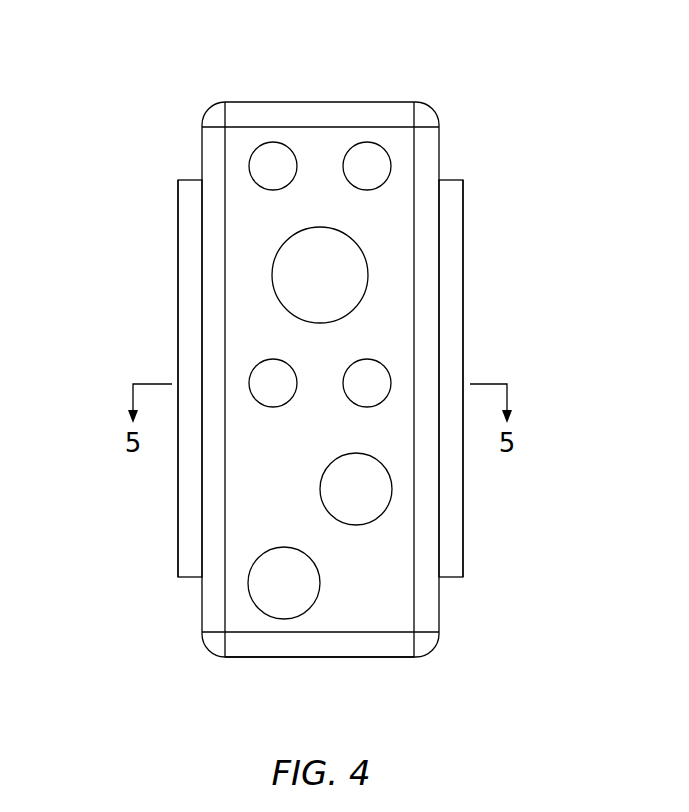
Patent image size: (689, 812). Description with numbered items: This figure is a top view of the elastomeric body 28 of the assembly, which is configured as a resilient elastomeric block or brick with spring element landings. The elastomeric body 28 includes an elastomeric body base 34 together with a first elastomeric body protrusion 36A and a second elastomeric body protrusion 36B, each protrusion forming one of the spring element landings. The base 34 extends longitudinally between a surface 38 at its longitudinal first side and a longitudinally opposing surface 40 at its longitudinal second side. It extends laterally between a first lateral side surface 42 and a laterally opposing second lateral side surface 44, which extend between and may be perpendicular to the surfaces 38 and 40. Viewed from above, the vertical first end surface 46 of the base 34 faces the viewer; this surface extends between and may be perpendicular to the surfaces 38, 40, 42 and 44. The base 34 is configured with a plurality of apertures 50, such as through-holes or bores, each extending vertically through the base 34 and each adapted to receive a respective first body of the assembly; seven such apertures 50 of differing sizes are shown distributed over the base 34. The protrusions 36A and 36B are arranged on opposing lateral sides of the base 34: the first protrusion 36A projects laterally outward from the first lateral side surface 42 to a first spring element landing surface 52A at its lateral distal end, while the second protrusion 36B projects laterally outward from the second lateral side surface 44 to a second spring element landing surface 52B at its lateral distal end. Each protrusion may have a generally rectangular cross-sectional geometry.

The elastomeric body 28 is at (484, 74).
The elastomeric body base 34 is at (237, 669).
The first elastomeric body protrusion 36A is at (472, 557).
The second elastomeric body protrusion 36B is at (168, 557).
The surface at longitudinal first side 38 is at (357, 101).
The surface at longitudinal second side 40 is at (322, 657).
The first lateral side surface 42 is at (440, 610).
The second lateral side surface 44 is at (202, 610).
The vertical first end surface 46 is at (402, 617).
The apertures 50 is at (259, 179).
The first spring element landing surface 52A is at (462, 520).
The second spring element landing surface 52B is at (178, 520).